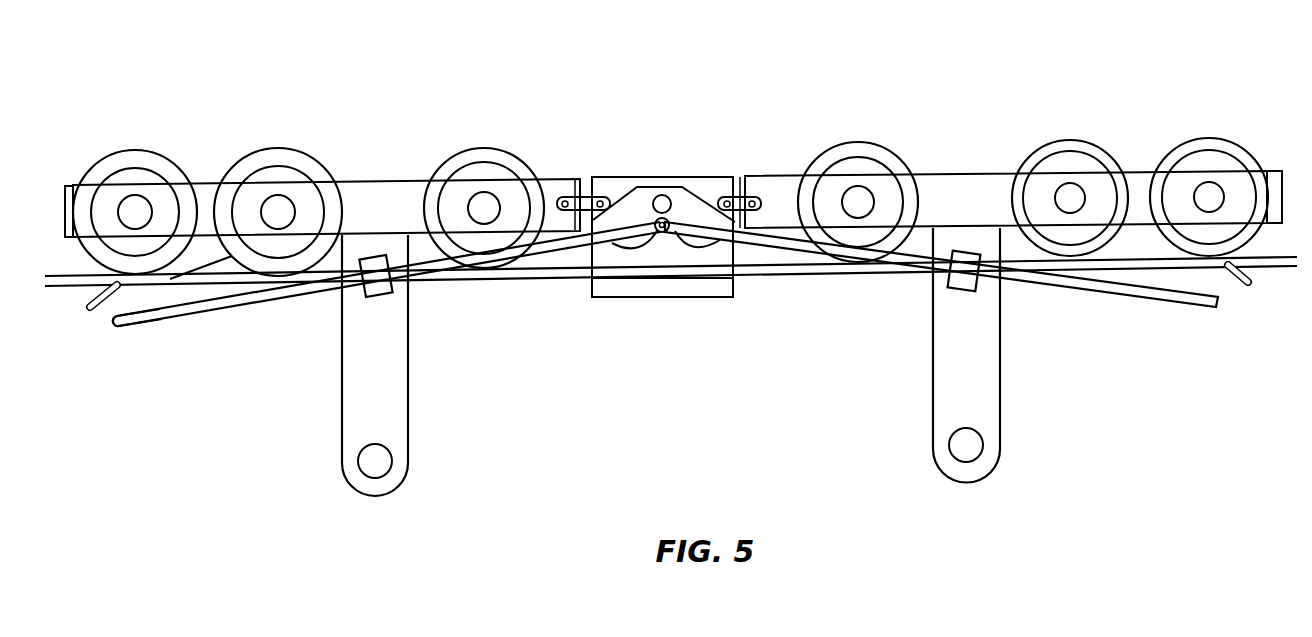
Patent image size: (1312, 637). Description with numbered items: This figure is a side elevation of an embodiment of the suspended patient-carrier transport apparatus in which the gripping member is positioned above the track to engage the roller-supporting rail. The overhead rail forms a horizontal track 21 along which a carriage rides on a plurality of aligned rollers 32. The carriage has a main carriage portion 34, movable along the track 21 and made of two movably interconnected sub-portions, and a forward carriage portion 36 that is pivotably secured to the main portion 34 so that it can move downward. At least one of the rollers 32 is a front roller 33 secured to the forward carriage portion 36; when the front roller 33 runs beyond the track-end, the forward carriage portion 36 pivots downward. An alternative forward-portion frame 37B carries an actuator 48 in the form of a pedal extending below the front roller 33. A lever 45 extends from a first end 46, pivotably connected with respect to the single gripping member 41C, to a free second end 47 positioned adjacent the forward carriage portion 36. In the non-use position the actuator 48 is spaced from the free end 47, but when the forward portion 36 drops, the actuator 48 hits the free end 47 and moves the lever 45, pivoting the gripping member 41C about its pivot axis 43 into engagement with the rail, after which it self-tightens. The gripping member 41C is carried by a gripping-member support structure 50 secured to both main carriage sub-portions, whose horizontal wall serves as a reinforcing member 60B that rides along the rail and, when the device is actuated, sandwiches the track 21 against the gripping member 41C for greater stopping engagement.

The horizontal track 21 is at (785, 268).
The aligned rollers 32 is at (290, 162).
The front roller 33 is at (146, 167).
The main carriage portion 34 is at (962, 194).
The forward carriage portion 36 is at (1145, 186).
The forward-portion frame 37B is at (203, 218).
The gripping member 41C is at (685, 205).
The gripping-member pivot axis 43 is at (662, 194).
The lever 45 is at (217, 307).
The first end 46 is at (632, 204).
The free second end 47 is at (127, 323).
The actuator 48 is at (100, 303).
The gripping-member support structure 50 is at (665, 257).
The reinforcing member 60B is at (597, 285).